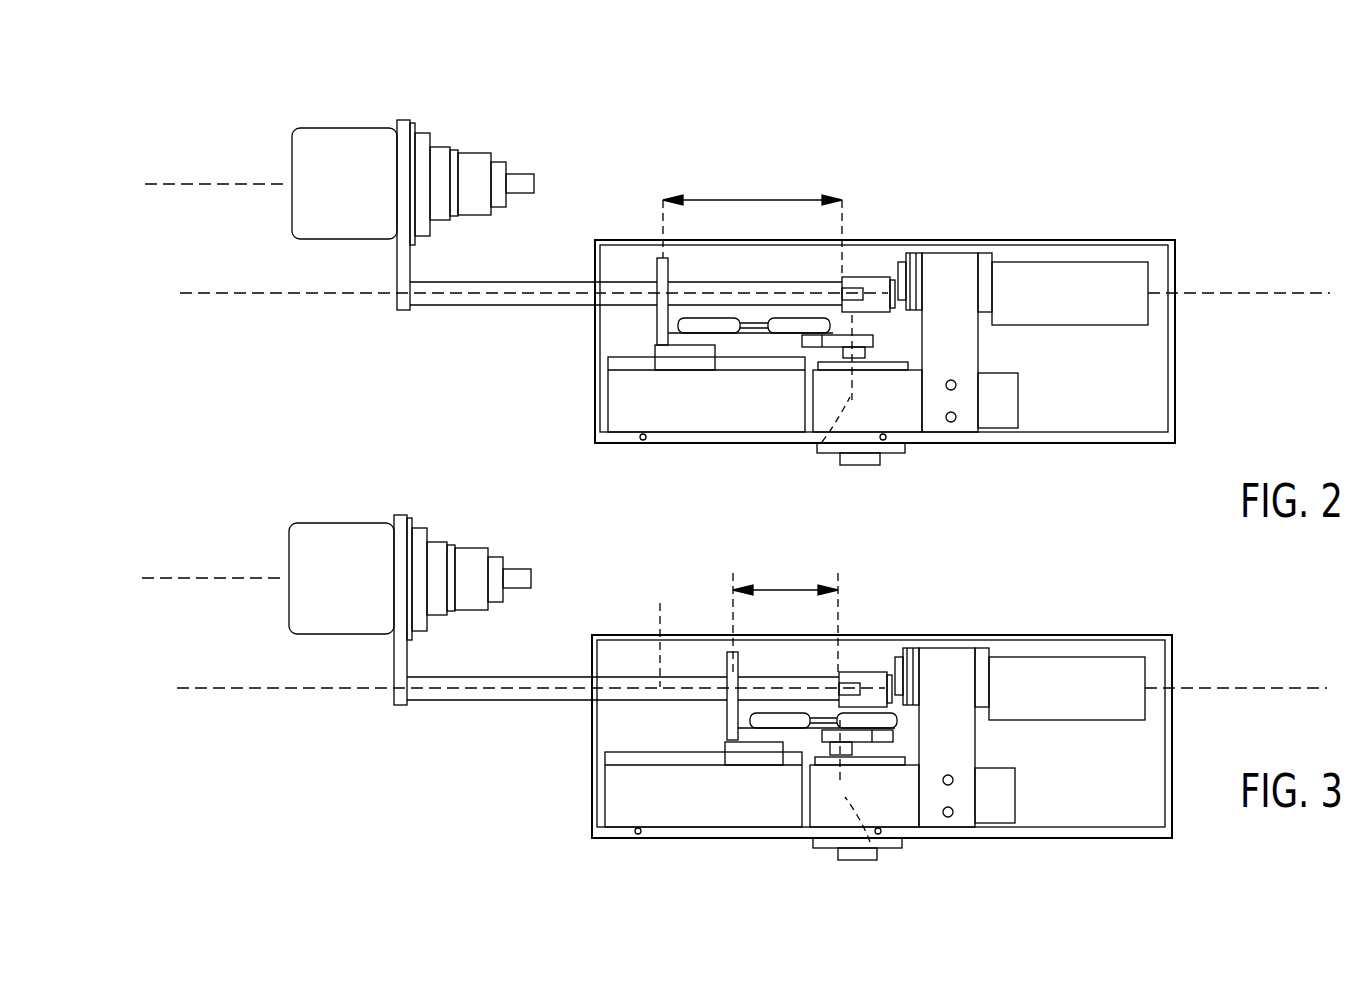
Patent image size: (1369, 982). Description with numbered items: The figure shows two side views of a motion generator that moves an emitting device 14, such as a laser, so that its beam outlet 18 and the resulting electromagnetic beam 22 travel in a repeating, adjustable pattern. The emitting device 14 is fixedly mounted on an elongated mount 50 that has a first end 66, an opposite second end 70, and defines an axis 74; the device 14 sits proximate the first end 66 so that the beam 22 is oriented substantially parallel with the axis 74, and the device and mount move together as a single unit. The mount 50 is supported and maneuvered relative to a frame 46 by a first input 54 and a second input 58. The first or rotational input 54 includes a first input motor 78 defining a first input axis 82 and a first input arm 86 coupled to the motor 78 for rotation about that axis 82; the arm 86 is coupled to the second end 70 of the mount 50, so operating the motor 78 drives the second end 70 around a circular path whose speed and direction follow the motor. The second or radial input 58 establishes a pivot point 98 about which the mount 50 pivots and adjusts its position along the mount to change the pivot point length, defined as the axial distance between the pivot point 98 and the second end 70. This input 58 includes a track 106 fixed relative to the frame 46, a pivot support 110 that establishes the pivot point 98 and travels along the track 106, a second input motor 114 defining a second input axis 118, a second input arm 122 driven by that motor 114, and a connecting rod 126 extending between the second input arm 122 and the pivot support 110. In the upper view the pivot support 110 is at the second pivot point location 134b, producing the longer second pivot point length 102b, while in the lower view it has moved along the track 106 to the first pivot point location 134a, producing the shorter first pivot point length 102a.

In FIG. 2, the emitting device 14 is at (353, 126).
In FIG. 3, the emitting device 14 is at (441, 545).
In FIG. 2, the beam outlet 18 is at (292, 212).
In FIG. 3, the beam outlet 18 is at (313, 581).
In FIG. 2, the electromagnetic beam 22 is at (203, 180).
In FIG. 3, the electromagnetic beam 22 is at (213, 541).
In FIG. 2, the axis 74 is at (282, 296).
In FIG. 3, the axis 74 is at (531, 726).
In FIG. 2, the first end 66 is at (415, 308).
In FIG. 3, the first end 66 is at (410, 652).
In FIG. 2, the mount 50 is at (488, 305).
In FIG. 3, the mount 50 is at (567, 726).
In FIG. 2, the pivot point 98 is at (668, 293).
In FIG. 3, the pivot point 98 is at (702, 735).
In FIG. 2, the second pivot point location 134b is at (660, 262).
In FIG. 3, the first pivot point location 134a is at (777, 642).
In FIG. 2, the second pivot point length 102b is at (750, 198).
In FIG. 3, the first pivot point length 102a is at (785, 596).
In FIG. 2, the second end 70 is at (835, 290).
In FIG. 3, the second end 70 is at (843, 651).
In FIG. 2, the first input arm 86 is at (898, 270).
In FIG. 3, the first input arm 86 is at (880, 634).
In FIG. 2, the first input 54 is at (908, 262).
In FIG. 3, the first input 54 is at (915, 639).
In FIG. 2, the second input arm 122 is at (862, 340).
In FIG. 3, the second input arm 122 is at (893, 730).
In FIG. 2, the second input motor 114 is at (885, 368).
In FIG. 3, the second input motor 114 is at (937, 737).
In FIG. 2, the first input motor 78 is at (1060, 272).
In FIG. 3, the first input motor 78 is at (1060, 656).
In FIG. 2, the first input axis 82 is at (1233, 290).
In FIG. 3, the first input axis 82 is at (1236, 652).
In FIG. 2, the frame 46 is at (1075, 438).
In FIG. 3, the frame 46 is at (882, 771).
In FIG. 2, the second input 58 is at (902, 365).
In FIG. 3, the second input 58 is at (891, 826).
In FIG. 2, the pivot support 110 is at (660, 325).
In FIG. 3, the pivot support 110 is at (660, 792).
In FIG. 2, the track 106 is at (672, 417).
In FIG. 3, the track 106 is at (703, 821).
In FIG. 2, the connecting rod 126 is at (753, 327).
In FIG. 3, the connecting rod 126 is at (823, 801).
In FIG. 2, the second input axis 118 is at (816, 456).
In FIG. 3, the second input axis 118 is at (865, 823).